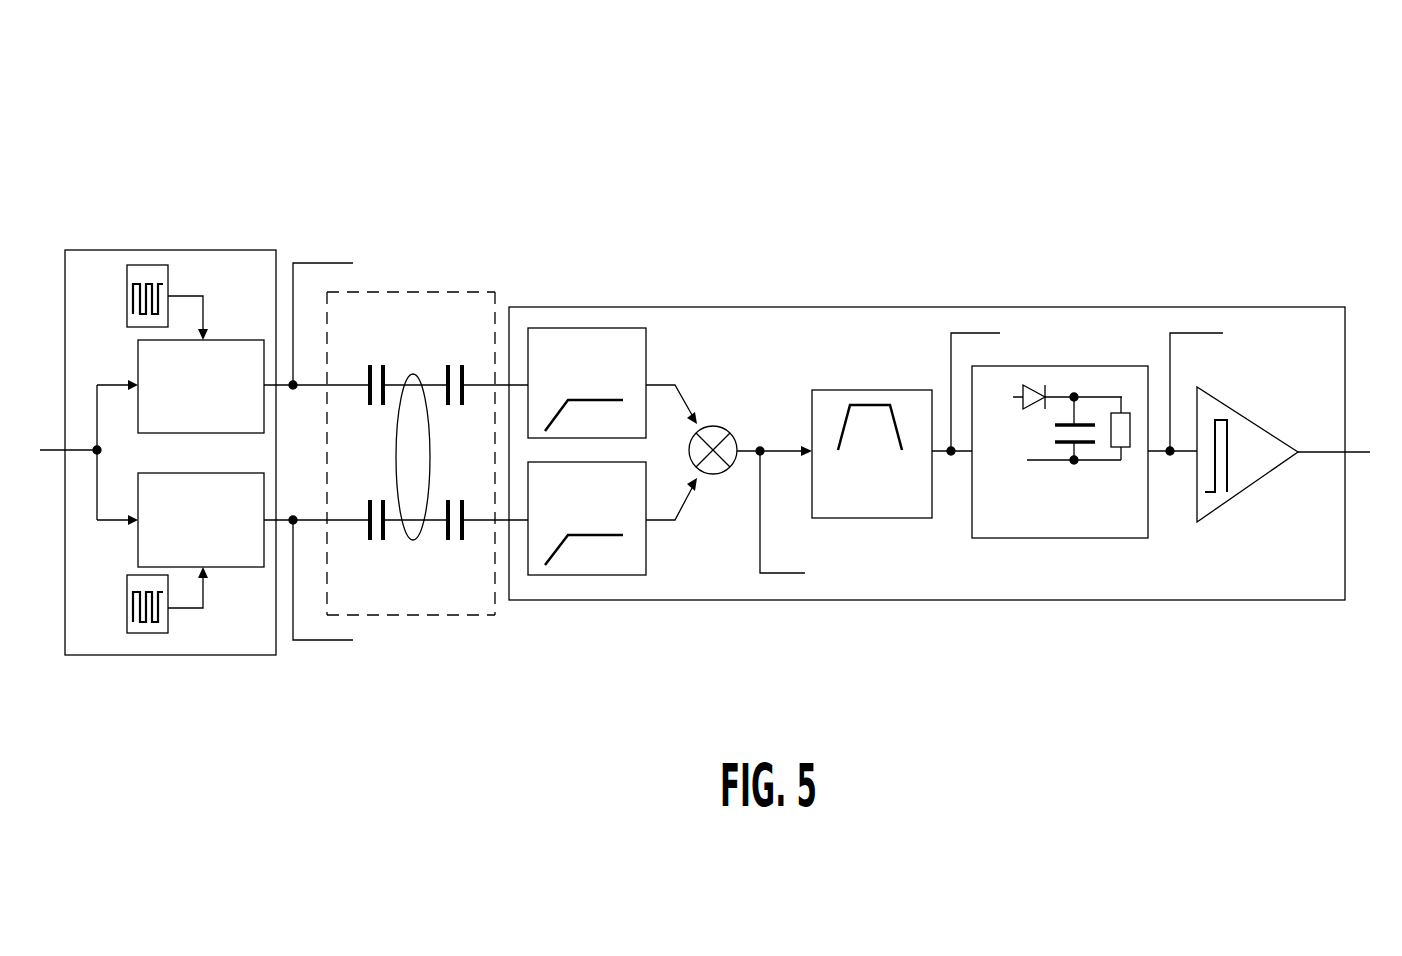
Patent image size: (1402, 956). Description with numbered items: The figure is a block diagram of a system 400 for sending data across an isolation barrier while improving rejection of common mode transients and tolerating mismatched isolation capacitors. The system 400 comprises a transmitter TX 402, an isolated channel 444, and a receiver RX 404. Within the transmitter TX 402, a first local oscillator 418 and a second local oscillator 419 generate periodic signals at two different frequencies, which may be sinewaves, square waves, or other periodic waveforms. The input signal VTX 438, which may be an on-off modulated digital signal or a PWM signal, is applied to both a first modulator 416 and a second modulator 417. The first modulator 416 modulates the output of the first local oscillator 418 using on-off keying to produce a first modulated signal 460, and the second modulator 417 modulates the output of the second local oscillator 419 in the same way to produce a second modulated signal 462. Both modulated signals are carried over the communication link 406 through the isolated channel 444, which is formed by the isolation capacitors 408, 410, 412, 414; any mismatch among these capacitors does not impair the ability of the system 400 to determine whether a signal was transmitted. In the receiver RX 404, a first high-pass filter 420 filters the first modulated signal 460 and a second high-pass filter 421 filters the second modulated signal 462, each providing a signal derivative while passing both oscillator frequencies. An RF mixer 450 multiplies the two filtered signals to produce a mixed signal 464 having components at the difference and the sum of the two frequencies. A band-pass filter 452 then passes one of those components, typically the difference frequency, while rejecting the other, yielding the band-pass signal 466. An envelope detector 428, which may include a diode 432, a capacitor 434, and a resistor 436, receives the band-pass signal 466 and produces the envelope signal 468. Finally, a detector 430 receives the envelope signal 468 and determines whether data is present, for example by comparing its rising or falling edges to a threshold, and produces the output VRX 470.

The system 400 is at (132, 124).
The transmitter TX 402 is at (205, 250).
The receiver RX 404 is at (905, 307).
The communication link 406 is at (412, 376).
The isolation capacitor 408 is at (368, 366).
The isolation capacitor 410 is at (368, 501).
The isolation capacitor 412 is at (463, 366).
The isolation capacitor 414 is at (463, 501).
The modulator 416 is at (235, 340).
The modulator 417 is at (210, 473).
The LO 1 418 is at (160, 265).
The LO 2 419 is at (150, 635).
The high-pass filter 420 is at (590, 328).
The high-pass filter 421 is at (600, 575).
The envelope detector 428 is at (1084, 447).
The detector 430 is at (1252, 420).
The diode 432 is at (1030, 397).
The capacitor 434 is at (1052, 440).
The resistor 436 is at (1125, 413).
The input signal VTX 438 is at (433, 292).
The isolated channel 444 is at (447, 620).
The RF mixer 450 is at (710, 478).
The band-pass filter 452 is at (835, 390).
The VTX_MOD1 460 is at (340, 263).
The VTX_MOD2 462 is at (330, 645).
The VRX_MIX 464 is at (780, 573).
The VRX_BP 466 is at (987, 333).
The VRX_ENV 468 is at (1197, 333).
The output VRX 470 is at (1315, 455).